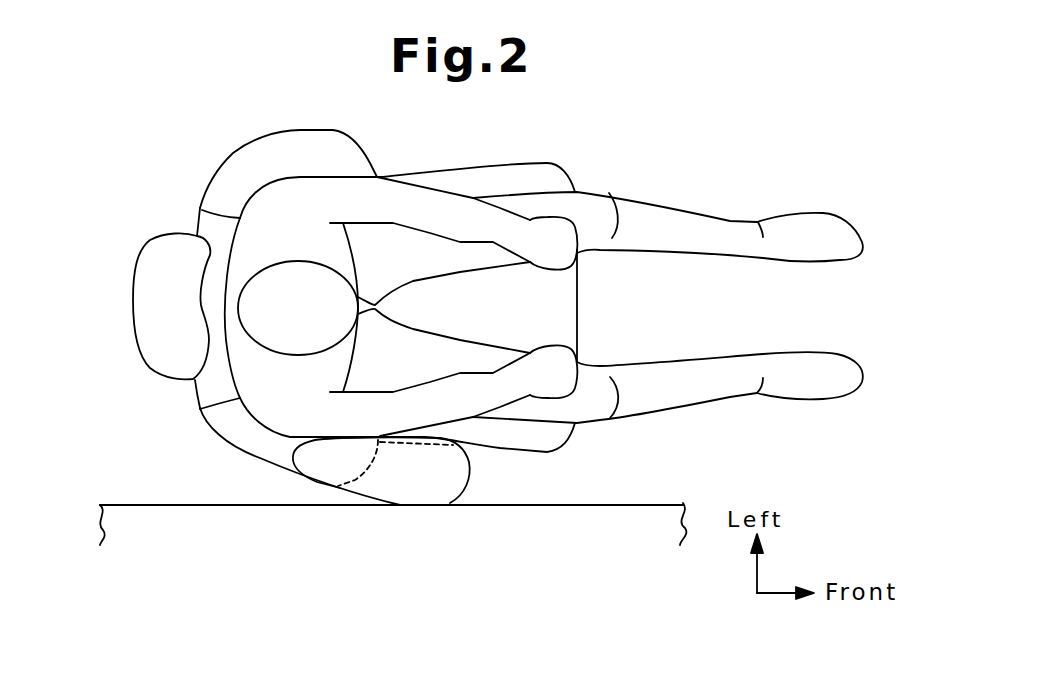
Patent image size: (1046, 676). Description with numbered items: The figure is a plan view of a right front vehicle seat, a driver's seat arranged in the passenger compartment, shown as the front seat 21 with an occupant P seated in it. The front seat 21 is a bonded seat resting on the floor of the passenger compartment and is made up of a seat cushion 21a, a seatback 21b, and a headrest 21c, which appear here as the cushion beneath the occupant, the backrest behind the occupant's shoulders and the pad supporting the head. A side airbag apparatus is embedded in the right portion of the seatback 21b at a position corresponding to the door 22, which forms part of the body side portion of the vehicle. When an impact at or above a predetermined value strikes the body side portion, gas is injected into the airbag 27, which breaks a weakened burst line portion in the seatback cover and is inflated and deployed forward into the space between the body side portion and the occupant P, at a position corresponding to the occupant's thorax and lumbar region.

The front seat 21 is at (216, 178).
The seat cushion 21a is at (578, 305).
The seatback 21b is at (197, 393).
The headrest 21c is at (133, 307).
The door 22 is at (654, 504).
The airbag 27 is at (472, 470).
The occupant P is at (293, 177).